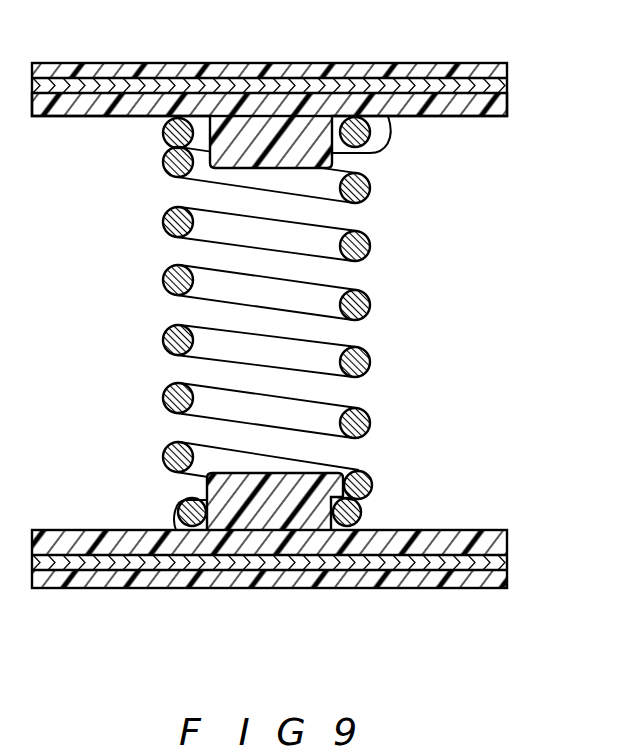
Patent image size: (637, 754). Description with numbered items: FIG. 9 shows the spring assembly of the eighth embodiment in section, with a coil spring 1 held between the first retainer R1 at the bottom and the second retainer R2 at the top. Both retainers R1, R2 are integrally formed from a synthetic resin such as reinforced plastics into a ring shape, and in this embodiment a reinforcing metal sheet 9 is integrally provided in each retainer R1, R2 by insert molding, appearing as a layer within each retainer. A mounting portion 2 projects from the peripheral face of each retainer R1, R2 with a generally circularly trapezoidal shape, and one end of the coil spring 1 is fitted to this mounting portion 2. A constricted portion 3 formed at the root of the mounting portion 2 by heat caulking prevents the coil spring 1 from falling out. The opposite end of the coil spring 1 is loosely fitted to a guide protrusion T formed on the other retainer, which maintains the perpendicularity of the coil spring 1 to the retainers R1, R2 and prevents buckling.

The coil spring 1 is at (372, 305).
The mounting portion 2 is at (280, 480).
The constricted portion 3 is at (198, 523).
The reinforcing metal sheet 9 is at (480, 80).
The guide protrusion T is at (288, 98).
The first retainer R1 is at (293, 515).
The second retainer R2 is at (480, 115).